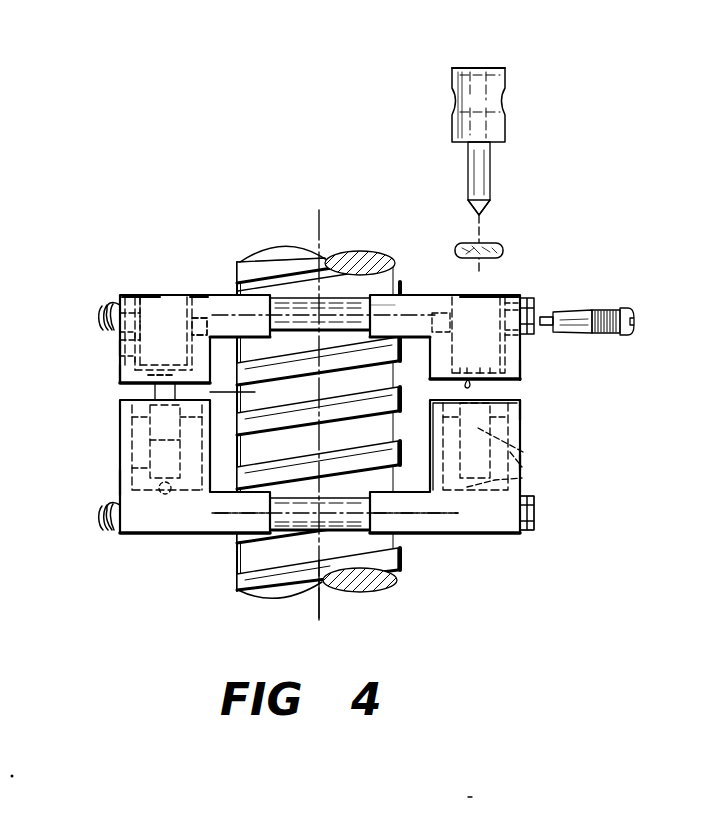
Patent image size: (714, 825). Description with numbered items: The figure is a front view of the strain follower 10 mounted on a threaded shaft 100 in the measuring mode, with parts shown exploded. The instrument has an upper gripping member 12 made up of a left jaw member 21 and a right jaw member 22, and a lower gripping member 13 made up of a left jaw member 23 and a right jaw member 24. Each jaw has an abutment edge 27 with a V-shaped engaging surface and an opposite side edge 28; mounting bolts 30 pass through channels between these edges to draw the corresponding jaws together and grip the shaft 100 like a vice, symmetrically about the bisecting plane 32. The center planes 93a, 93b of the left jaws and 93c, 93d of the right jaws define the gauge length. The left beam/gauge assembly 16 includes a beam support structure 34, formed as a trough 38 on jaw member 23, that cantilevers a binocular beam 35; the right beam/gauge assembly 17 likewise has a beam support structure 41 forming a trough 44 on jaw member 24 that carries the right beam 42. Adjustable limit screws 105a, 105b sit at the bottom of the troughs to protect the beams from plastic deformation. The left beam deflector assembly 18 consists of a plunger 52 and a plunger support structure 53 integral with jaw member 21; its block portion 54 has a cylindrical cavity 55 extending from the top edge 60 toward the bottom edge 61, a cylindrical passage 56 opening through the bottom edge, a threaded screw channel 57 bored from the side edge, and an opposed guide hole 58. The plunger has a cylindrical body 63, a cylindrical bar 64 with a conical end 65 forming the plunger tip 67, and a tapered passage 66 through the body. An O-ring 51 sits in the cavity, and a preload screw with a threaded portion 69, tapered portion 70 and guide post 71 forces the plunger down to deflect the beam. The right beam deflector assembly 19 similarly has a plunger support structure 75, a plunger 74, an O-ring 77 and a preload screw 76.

The strain follower 10 is at (90, 210).
The upper gripping member 12 is at (118, 291).
The lower gripping member 13 is at (171, 545).
The left beam/gauge assembly 16 is at (118, 440).
The right beam/gauge assembly 17 is at (523, 442).
The left beam deflector assembly 18 is at (118, 372).
The right beam deflector assembly 19 is at (529, 378).
The left jaw member 21 is at (240, 312).
The right jaw member 22 is at (410, 305).
The left jaw member 23 is at (232, 528).
The right jaw member 24 is at (420, 530).
The abutment edge 27 is at (272, 335).
The side edge 28 is at (107, 300).
The mounting bolts 30 is at (523, 533).
The plane 32 is at (319, 210).
The beam support structure 34 is at (120, 483).
The beam 35 is at (155, 448).
The trough 38 is at (133, 468).
The beam support structure 41 is at (522, 460).
The right beam 42 is at (523, 452).
The trough 44 is at (522, 467).
The O-ring 51 is at (140, 373).
The plunger 52 is at (158, 297).
The plunger support structure 53 is at (118, 349).
The block portion 54 is at (118, 363).
The cylindrical cavity 55 is at (140, 296).
The cylindrical passage 56 is at (530, 408).
The threaded screw channel 57 is at (118, 337).
The guide hole 58 is at (202, 317).
The top edge 60 is at (203, 297).
The bottom edge 61 is at (225, 395).
The cylindrical body 63 is at (505, 130).
The cylindrical bar 64 is at (155, 393).
The conical end 65 is at (490, 205).
The tapered passage 66 is at (513, 151).
The plunger tip 67 is at (483, 217).
The threaded portion 69 is at (603, 298).
The tapered portion 70 is at (592, 325).
The guide post 71 is at (547, 316).
The plunger 74 is at (480, 68).
The plunger support structure 75 is at (531, 387).
The preload screw 76 is at (630, 303).
The O-ring 77 is at (507, 248).
The center plane 93a is at (243, 307).
The center plane 93b is at (223, 514).
The center plane 93c is at (388, 315).
The center plane 93d is at (430, 515).
The threaded shaft 100 is at (293, 595).
The adjustable limit screw 105a is at (167, 490).
The adjustable limit screw 105b is at (522, 478).